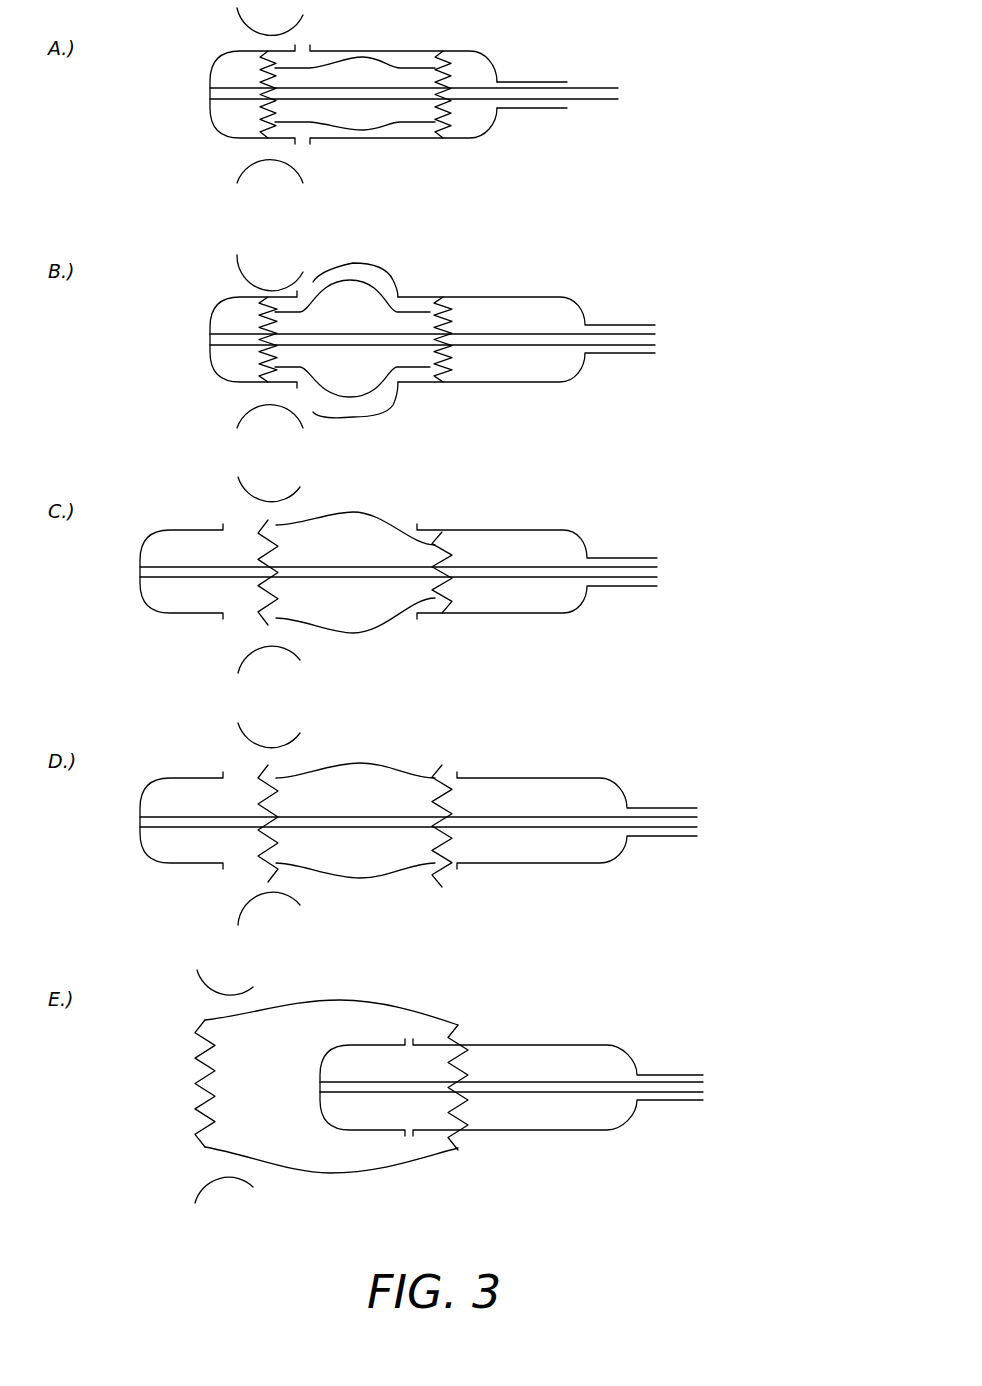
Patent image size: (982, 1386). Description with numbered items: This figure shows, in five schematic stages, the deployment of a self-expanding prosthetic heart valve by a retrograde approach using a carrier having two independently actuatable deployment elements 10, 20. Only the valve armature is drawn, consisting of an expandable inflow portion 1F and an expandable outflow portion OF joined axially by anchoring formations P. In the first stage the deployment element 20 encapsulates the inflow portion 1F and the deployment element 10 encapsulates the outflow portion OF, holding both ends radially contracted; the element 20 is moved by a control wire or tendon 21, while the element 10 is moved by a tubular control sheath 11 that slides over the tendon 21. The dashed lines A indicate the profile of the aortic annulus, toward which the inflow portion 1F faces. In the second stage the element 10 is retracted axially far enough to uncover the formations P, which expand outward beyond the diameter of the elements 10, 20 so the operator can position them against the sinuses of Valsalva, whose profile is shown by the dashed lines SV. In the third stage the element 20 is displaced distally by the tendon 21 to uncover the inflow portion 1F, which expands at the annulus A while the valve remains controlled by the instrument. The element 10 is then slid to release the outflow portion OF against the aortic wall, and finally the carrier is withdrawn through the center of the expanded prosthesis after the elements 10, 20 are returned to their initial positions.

The deployment element 10 is at (425, 50).
The tubular control sheath 11 is at (565, 108).
The deployment element 20 is at (210, 114).
The control wire or tendon 21 is at (358, 88).
The aortic annulus A is at (238, 22).
The anchoring formations P is at (392, 128).
The inflow portion 1F is at (268, 140).
The outflow portion OF is at (443, 140).
The sinuses of Valsalva SV is at (372, 268).